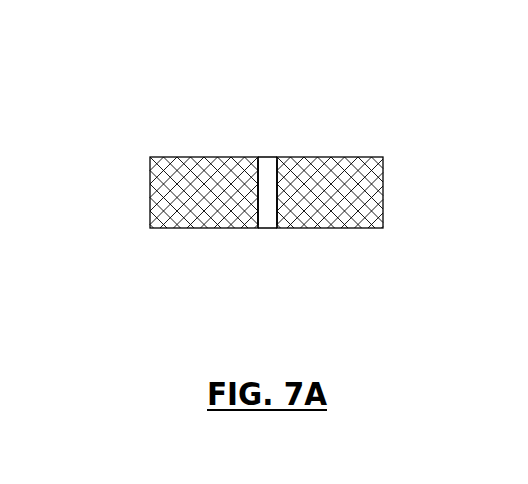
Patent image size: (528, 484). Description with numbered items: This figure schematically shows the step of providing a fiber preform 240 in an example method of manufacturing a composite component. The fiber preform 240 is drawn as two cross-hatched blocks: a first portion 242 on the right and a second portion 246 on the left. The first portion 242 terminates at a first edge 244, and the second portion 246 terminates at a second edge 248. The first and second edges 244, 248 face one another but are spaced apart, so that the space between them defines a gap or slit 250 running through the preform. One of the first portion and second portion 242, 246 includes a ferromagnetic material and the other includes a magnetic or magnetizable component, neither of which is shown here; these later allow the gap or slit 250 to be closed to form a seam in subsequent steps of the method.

The fiber preform 240 is at (239, 167).
The first portion 242 is at (345, 170).
The first edge 244 is at (278, 172).
The second portion 246 is at (156, 162).
The second edge 248 is at (256, 178).
The gap or slit 250 is at (265, 212).